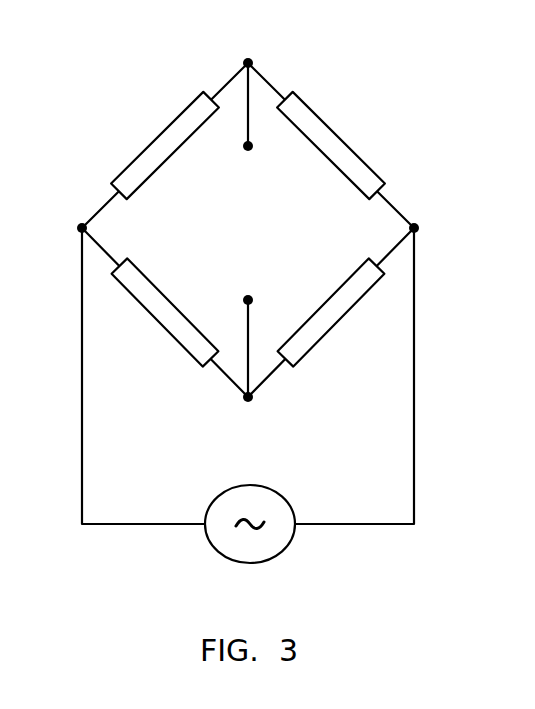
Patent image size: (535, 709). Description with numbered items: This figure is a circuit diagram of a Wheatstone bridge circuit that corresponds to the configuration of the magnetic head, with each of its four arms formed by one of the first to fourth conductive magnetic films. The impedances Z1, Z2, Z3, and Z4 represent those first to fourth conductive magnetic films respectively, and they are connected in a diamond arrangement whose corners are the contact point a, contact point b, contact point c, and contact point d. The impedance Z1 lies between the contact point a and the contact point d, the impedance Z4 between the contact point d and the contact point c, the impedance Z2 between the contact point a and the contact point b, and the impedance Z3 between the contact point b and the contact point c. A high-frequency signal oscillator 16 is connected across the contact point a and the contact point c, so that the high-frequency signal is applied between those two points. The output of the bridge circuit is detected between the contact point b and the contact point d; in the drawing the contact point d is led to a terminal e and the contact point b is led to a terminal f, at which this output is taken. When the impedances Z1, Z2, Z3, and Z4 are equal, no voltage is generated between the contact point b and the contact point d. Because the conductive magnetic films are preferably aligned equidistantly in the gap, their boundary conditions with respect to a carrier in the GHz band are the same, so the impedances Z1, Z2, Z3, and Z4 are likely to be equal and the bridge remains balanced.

The high-frequency signal oscillator 16 is at (268, 561).
The impedance Z1 is at (165, 145).
The impedance Z2 is at (165, 312).
The impedance Z3 is at (331, 312).
The impedance Z4 is at (331, 145).
The contact point a is at (62, 229).
The contact point b is at (248, 412).
The contact point c is at (431, 229).
The contact point d is at (248, 50).
The output terminal e is at (248, 162).
The output terminal f is at (248, 285).